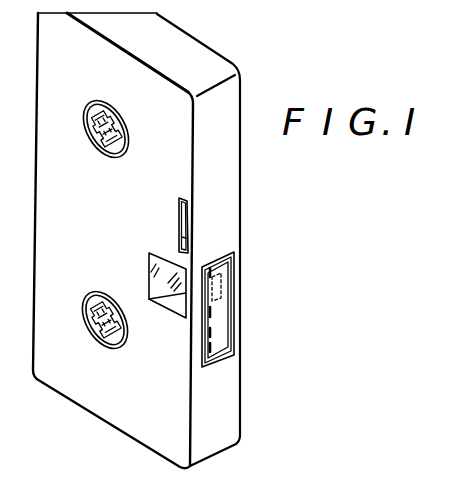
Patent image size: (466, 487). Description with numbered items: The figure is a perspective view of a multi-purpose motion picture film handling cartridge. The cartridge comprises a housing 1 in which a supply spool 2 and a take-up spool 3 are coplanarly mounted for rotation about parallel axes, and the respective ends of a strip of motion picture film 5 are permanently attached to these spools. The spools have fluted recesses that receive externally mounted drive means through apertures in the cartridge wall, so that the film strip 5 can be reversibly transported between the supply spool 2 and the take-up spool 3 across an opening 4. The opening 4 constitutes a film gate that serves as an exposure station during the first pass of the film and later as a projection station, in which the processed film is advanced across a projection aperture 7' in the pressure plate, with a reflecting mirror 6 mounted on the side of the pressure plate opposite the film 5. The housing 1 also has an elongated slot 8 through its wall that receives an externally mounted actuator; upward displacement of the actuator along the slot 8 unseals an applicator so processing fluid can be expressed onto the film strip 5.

The housing 1 is at (180, 40).
The supply spool 2 is at (90, 142).
The take-up spool 3 is at (87, 330).
The opening 4 is at (232, 308).
The film strip 5 is at (212, 333).
The reflecting mirror 6 is at (163, 292).
The projection aperture 7' is at (247, 273).
The elongated slot 8 is at (180, 240).